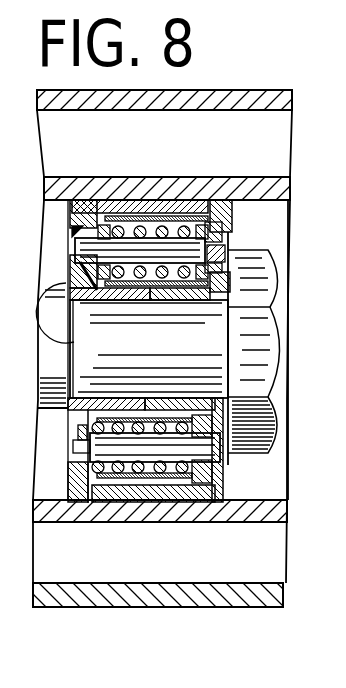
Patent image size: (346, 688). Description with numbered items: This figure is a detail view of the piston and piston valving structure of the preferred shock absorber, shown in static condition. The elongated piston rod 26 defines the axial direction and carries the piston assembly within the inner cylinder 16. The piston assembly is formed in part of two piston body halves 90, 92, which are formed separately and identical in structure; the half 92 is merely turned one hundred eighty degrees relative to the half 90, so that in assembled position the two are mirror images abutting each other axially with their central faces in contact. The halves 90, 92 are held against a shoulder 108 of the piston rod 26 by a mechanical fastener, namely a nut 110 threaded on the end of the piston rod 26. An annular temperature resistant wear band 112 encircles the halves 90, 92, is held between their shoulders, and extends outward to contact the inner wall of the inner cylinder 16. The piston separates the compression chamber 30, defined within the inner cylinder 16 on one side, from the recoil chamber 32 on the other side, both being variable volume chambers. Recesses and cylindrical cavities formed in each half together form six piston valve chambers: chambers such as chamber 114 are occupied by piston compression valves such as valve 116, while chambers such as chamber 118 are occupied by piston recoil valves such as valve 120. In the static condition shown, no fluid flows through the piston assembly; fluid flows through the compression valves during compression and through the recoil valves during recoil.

The inner cylinder 16 is at (272, 190).
The piston rod 26 is at (57, 360).
The compression chamber 30 is at (262, 230).
The recoil chamber 32 is at (52, 450).
The piston body half 90 is at (80, 460).
The piston body half 92 is at (217, 490).
The shoulder 108 is at (80, 337).
The nut 110 is at (263, 298).
The wear band 112 is at (173, 205).
The piston valve chamber 114 is at (133, 470).
The piston compression valve 116 is at (225, 465).
The piston valve chamber 118 is at (123, 230).
The piston recoil valve 120 is at (66, 203).